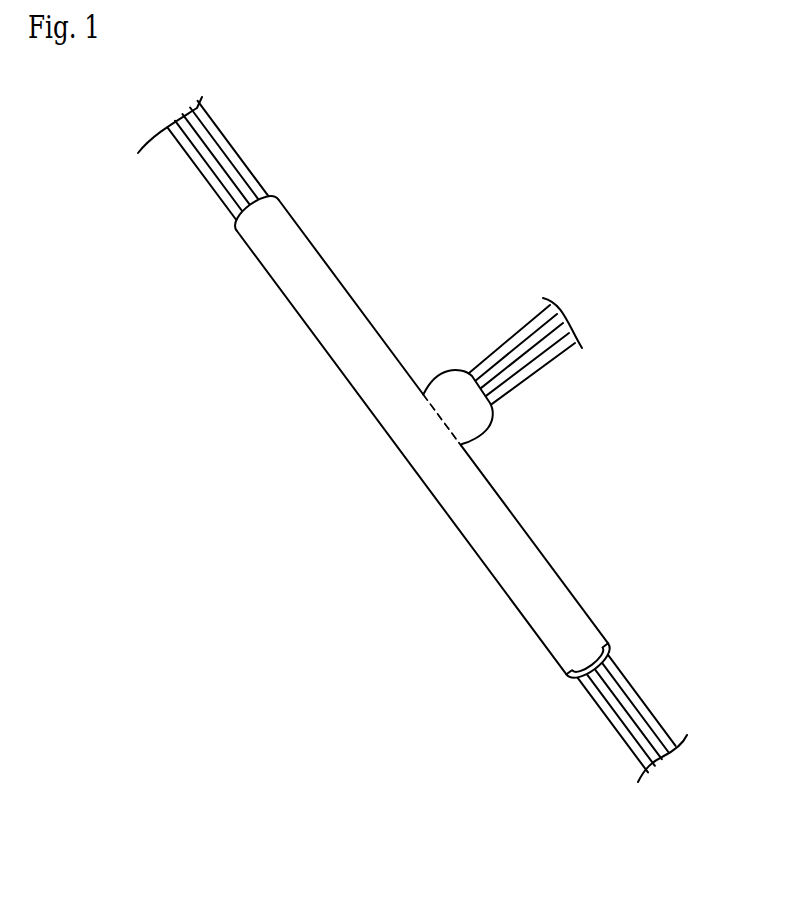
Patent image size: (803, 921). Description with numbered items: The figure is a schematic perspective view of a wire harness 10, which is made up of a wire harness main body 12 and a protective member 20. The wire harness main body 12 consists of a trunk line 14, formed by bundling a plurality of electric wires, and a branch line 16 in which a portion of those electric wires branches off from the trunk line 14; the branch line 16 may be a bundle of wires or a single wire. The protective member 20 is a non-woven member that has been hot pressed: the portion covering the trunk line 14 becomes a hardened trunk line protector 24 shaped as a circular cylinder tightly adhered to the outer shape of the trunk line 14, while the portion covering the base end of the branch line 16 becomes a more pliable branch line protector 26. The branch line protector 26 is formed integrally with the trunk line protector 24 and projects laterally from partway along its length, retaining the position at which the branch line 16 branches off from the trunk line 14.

The wire harness 10 is at (433, 439).
The wire harness main body 12 is at (646, 697).
The trunk line 14 is at (664, 729).
The branch line 16 is at (539, 372).
The protective member 20 is at (422, 437).
The trunk line protector 24 is at (531, 548).
The branch line protector 26 is at (443, 372).